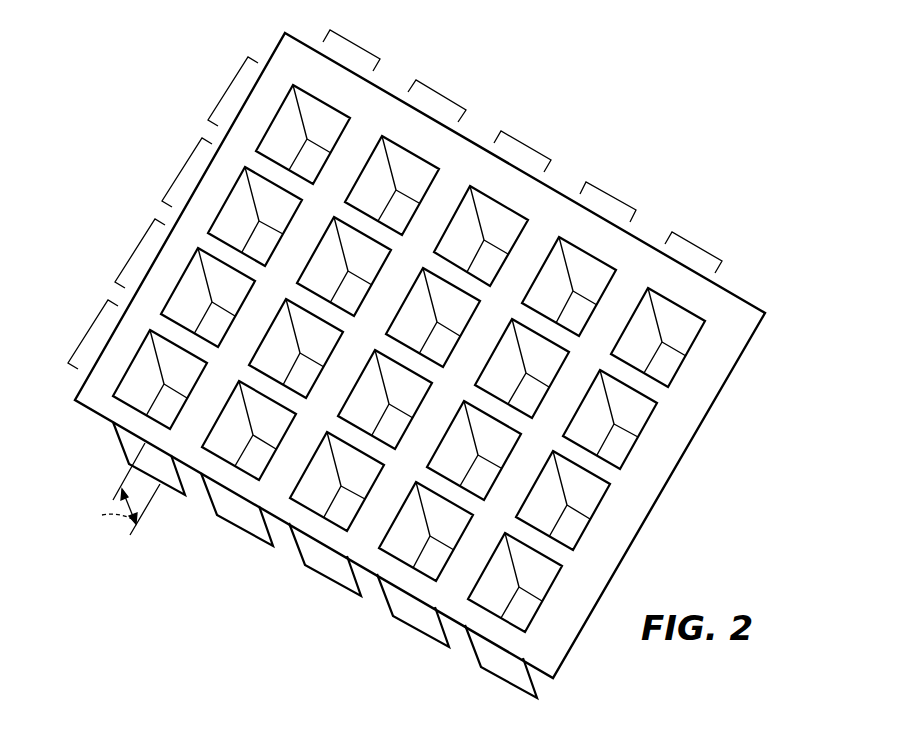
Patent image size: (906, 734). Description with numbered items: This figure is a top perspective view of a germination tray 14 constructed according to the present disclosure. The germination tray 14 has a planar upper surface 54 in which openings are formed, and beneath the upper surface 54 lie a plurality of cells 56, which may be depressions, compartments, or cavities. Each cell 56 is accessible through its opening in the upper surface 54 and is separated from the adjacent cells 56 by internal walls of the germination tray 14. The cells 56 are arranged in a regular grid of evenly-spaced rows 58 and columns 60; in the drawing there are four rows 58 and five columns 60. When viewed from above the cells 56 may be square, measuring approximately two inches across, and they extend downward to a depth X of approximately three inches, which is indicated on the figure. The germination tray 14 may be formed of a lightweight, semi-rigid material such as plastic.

The germination tray 14 is at (88, 72).
The planar upper surface 54 is at (658, 453).
The cells 56 is at (157, 398).
The rows 58 is at (228, 88).
The columns 60 is at (355, 44).